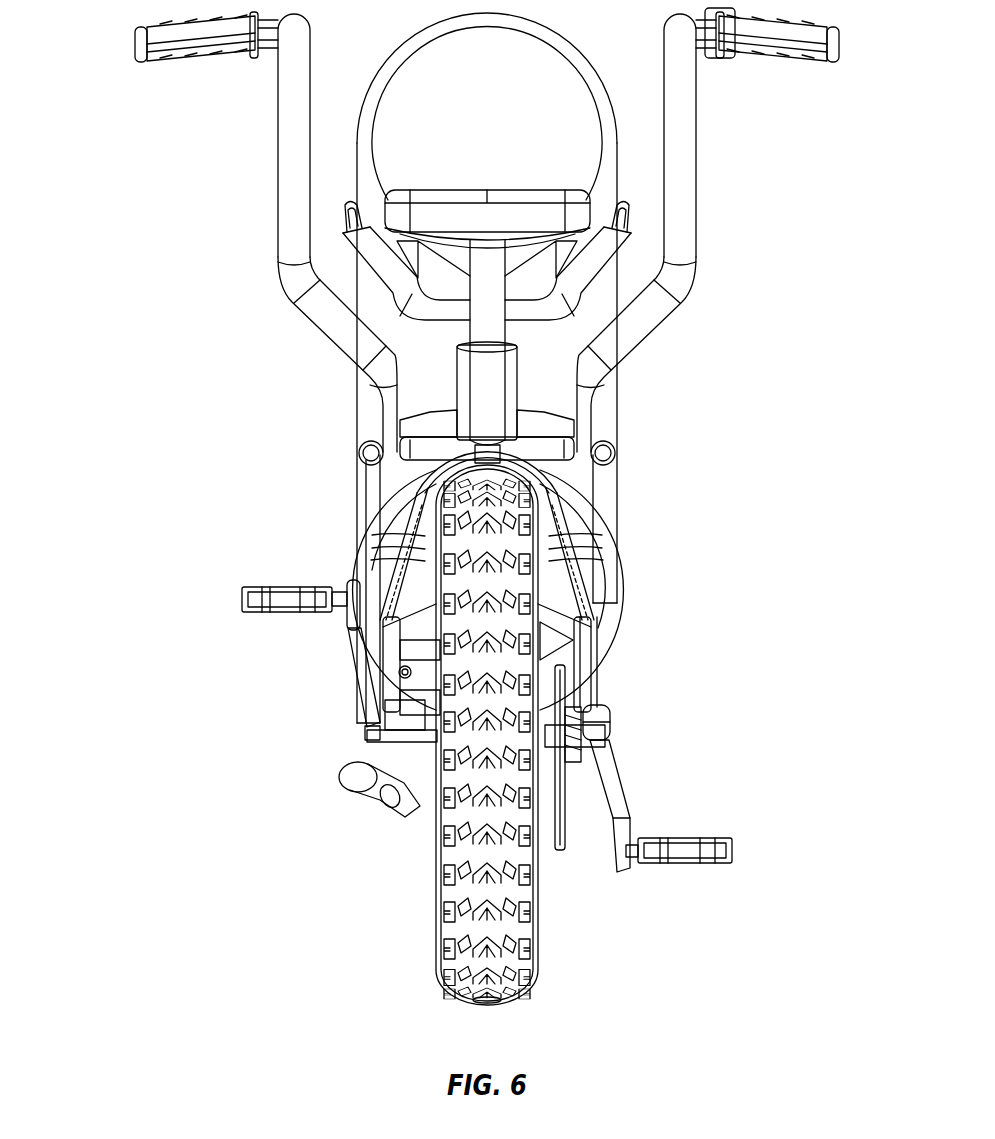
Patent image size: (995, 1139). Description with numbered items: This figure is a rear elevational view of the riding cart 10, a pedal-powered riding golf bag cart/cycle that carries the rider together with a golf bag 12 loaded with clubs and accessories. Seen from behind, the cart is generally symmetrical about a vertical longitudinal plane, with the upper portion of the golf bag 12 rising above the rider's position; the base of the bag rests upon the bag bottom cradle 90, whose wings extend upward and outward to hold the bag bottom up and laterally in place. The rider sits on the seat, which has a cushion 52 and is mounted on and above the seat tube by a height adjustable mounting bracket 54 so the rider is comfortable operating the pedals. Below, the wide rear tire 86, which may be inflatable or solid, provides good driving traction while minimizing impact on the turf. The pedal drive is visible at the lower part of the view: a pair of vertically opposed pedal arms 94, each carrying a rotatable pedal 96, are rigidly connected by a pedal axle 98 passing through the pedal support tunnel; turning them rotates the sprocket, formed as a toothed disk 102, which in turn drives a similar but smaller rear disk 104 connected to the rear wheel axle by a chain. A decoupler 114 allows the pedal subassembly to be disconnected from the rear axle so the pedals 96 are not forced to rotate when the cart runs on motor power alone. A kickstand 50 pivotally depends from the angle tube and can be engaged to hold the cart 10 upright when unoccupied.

The riding cart 10 is at (142, 107).
The golf bag 12 is at (500, 113).
The kickstand 50 is at (340, 790).
The cushion 52 is at (583, 247).
The height adjustable mounting bracket 54 is at (558, 217).
The rear tire 86 is at (533, 975).
The bag bottom cradle 90 is at (597, 580).
The pedal arm 94 is at (357, 665).
The pedal 96 is at (268, 612).
The pedal axle 98 is at (380, 548).
The toothed disk 102 is at (600, 790).
The rear disk 104 is at (600, 710).
The decoupler 114 is at (563, 853).